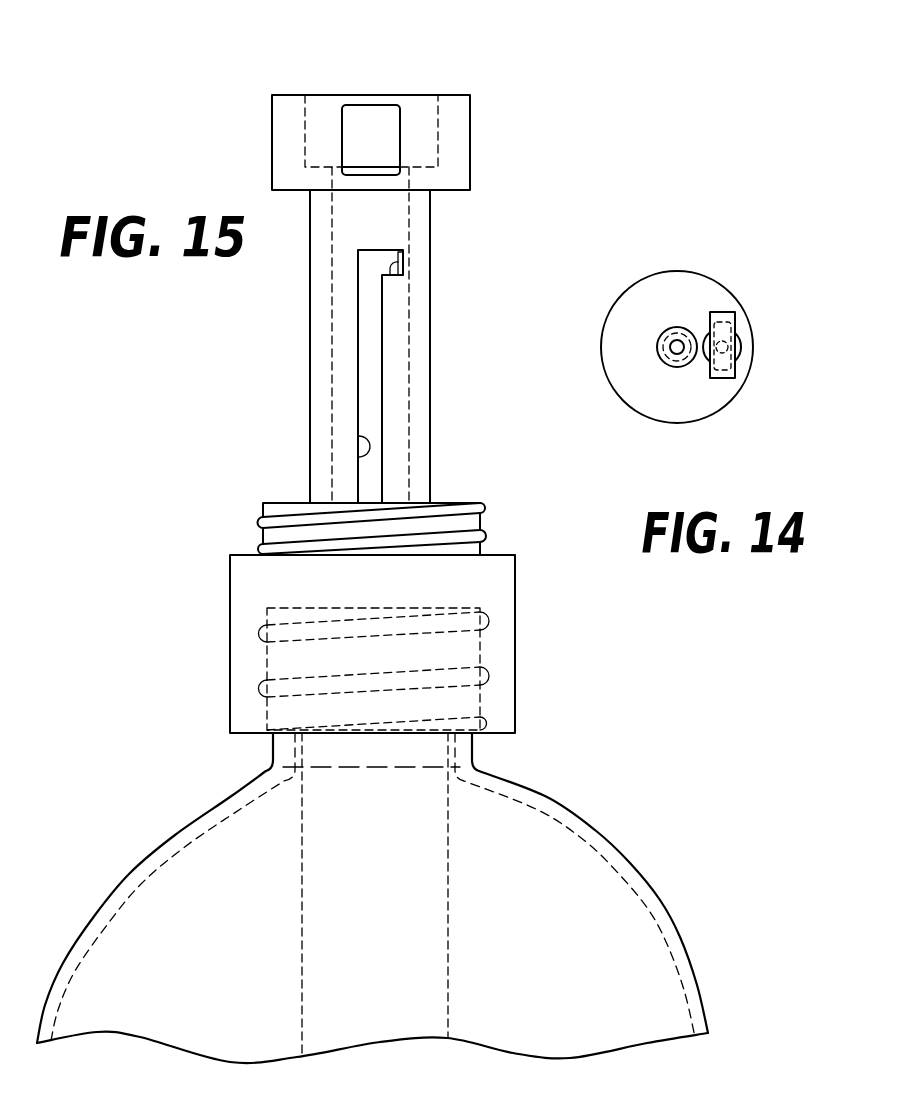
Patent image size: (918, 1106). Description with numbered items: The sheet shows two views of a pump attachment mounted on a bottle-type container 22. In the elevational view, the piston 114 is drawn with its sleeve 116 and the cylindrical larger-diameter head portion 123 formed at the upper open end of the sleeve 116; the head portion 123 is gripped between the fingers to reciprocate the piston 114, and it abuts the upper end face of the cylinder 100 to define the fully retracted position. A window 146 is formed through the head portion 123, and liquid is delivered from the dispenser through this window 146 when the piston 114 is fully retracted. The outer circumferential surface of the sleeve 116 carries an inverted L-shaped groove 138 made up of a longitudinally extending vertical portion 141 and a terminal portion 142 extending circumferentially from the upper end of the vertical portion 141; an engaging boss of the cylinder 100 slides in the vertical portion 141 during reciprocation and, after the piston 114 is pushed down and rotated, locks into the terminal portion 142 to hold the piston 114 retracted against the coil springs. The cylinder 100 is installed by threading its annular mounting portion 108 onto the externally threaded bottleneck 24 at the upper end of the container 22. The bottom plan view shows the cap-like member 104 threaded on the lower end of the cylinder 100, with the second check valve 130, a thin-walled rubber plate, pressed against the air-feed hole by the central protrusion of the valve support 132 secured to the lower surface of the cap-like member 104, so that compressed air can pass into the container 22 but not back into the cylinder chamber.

In FIG. 15, the container 22 is at (705, 965).
In FIG. 15, the bottleneck 24 is at (462, 648).
In FIG. 15, the cylinder 100 is at (462, 975).
In FIG. 14, the cylinder 100 is at (603, 391).
In FIG. 14, the cap-like member 104 is at (673, 410).
In FIG. 15, the annular mounting portion 108 is at (495, 578).
In FIG. 15, the piston 114 is at (298, 335).
In FIG. 15, the sleeve 116 is at (420, 367).
In FIG. 15, the head portion 123 is at (287, 122).
In FIG. 14, the second check valve 130 is at (737, 340).
In FIG. 14, the valve support 132 is at (725, 370).
In FIG. 15, the inverted L-shaped groove 138 is at (347, 395).
In FIG. 15, the vertical portion 141 is at (358, 456).
In FIG. 15, the terminal portion 142 is at (397, 260).
In FIG. 15, the window 146 is at (398, 137).